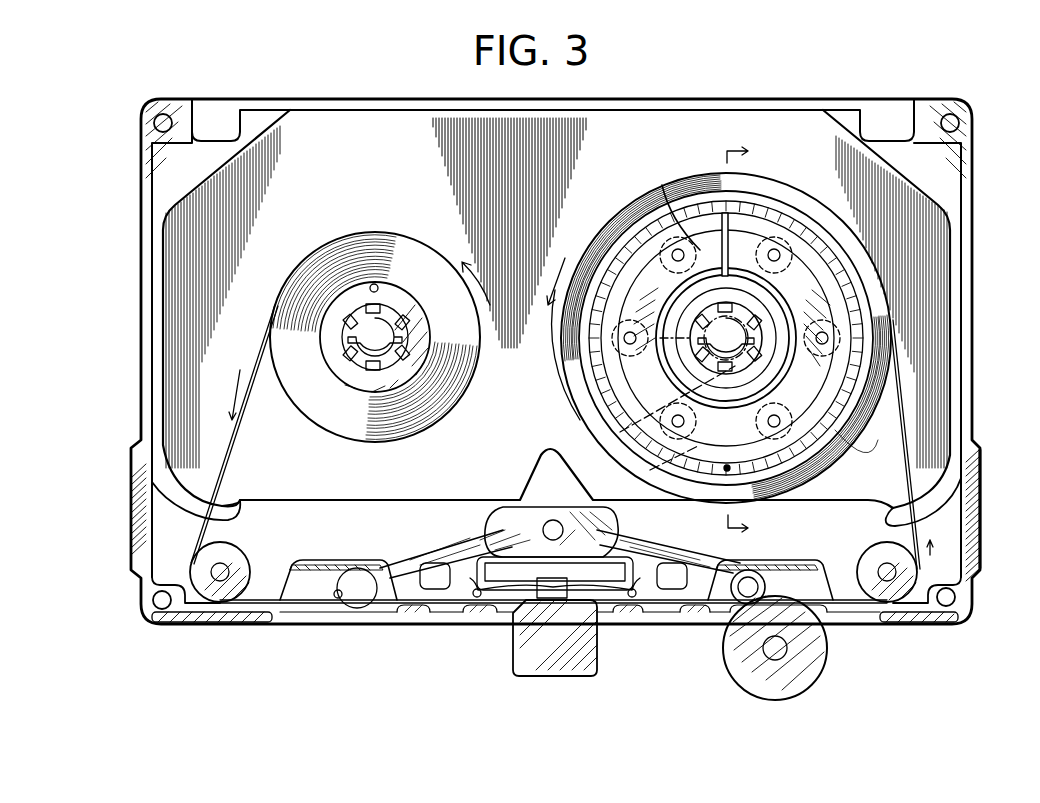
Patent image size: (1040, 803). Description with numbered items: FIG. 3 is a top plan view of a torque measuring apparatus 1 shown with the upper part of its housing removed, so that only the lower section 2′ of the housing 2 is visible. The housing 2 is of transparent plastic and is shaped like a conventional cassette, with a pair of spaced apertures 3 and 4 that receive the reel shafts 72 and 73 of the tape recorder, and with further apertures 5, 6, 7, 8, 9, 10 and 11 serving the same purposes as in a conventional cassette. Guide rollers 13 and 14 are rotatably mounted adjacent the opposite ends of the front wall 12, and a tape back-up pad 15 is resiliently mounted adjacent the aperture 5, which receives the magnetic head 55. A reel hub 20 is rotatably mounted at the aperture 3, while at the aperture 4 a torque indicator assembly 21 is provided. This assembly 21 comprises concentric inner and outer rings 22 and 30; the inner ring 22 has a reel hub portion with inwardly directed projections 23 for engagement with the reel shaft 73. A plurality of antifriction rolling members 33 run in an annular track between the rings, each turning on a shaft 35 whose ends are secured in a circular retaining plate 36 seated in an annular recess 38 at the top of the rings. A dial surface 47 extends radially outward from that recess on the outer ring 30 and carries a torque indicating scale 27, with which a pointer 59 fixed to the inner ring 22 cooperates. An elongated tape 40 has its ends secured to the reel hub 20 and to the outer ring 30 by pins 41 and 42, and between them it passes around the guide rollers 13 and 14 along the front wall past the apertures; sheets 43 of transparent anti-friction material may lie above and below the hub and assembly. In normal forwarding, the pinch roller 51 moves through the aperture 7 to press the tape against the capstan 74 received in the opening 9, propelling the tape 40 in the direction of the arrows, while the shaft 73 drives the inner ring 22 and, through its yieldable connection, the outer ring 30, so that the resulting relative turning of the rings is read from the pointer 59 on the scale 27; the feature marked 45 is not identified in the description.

The torque measuring apparatus 1 is at (994, 156).
The housing 2 is at (962, 214).
The lower section of the housing 2′ is at (964, 272).
The aperture 3 is at (380, 372).
The aperture 4 is at (738, 392).
The aperture 5 is at (500, 620).
The aperture 6 is at (360, 610).
The aperture 7 is at (722, 615).
The aperture 8 is at (338, 600).
The aperture 9 is at (740, 572).
The aperture 10 is at (436, 590).
The aperture 11 is at (672, 592).
The front wall 12 is at (212, 619).
The guide roller 13 is at (232, 556).
The guide roller 14 is at (895, 595).
The tape back-up pad 15 is at (546, 598).
The reel hub 20 is at (408, 305).
The torque indicator assembly 21 is at (801, 213).
The inner ring 22 is at (770, 352).
The inwardly directed projections 23 is at (375, 366).
The torque indicating scale 27 is at (810, 245).
The outer ring 30 is at (588, 362).
The antifriction rolling members 33 is at (660, 426).
The shaft 35 is at (766, 380).
The retaining plate 36 is at (832, 302).
The annular recess 38 is at (808, 432).
The tape 40 is at (232, 432).
The pin 41 is at (374, 284).
The pin 42 is at (727, 472).
The sheets of transparent anti-friction material 43 is at (165, 258).
The window 45 is at (647, 183).
The dial surface 47 is at (832, 272).
The pinch roller 51 is at (822, 632).
The magnetic head 55 is at (590, 637).
The pointer 59 is at (732, 216).
The reel shaft 72 is at (345, 335).
The reel shaft 73 is at (700, 345).
The capstan 74 is at (752, 582).